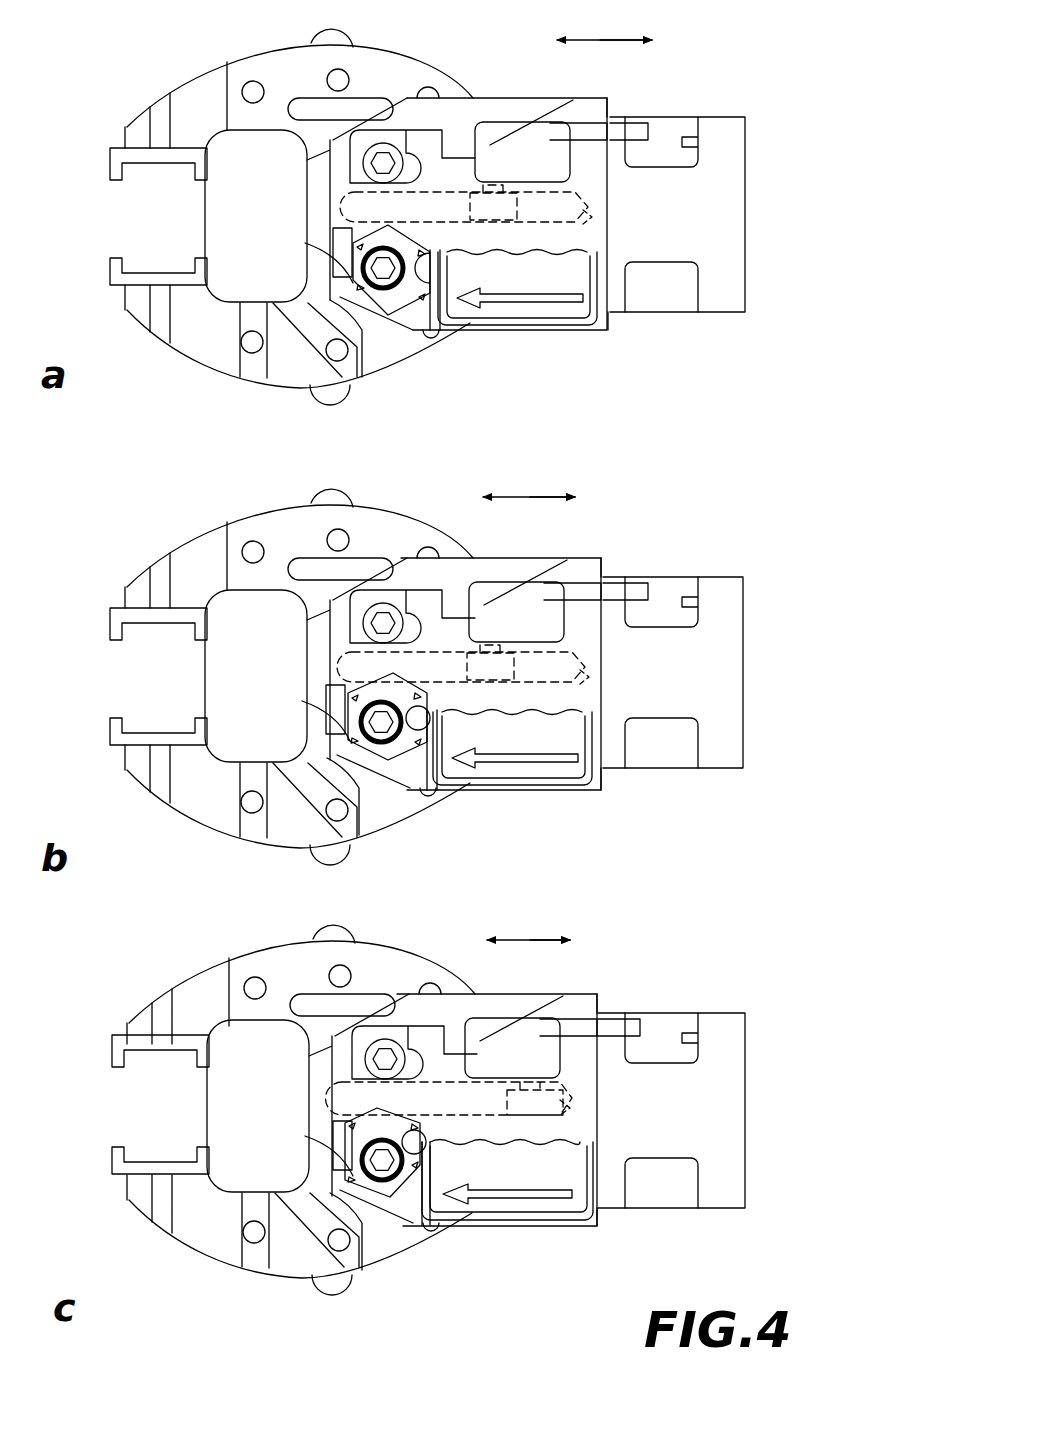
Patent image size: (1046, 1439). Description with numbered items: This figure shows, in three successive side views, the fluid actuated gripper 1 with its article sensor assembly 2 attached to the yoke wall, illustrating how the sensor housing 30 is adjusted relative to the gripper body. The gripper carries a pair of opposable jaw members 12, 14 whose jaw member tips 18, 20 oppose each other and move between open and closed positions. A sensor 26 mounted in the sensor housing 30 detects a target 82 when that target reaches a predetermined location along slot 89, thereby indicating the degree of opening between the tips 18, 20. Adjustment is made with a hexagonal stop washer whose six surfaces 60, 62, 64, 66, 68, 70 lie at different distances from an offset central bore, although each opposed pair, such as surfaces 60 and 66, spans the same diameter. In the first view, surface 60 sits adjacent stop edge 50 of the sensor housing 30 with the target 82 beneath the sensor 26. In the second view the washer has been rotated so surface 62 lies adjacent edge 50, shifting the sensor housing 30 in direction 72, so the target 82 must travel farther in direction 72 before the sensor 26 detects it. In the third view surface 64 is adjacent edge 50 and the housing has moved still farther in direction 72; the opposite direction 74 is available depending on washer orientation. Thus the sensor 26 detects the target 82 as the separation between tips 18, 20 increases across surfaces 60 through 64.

The fluid actuated gripper 1 is at (715, 95).
The article sensor assembly 2 is at (615, 327).
The jaw member 12 is at (212, 78).
The jaw member 14 is at (213, 348).
The jaw member tip 18 is at (147, 167).
The jaw member tip 20 is at (147, 270).
The sensor 26 is at (528, 157).
The sensor housing 30 is at (587, 240).
The stop edge 50 is at (430, 248).
The surface 60 is at (437, 277).
The surface 62 is at (400, 335).
The surface 64 is at (367, 313).
The surface 66 is at (340, 290).
The surface 68 is at (352, 242).
The surface 70 is at (427, 237).
The direction 72 is at (573, 32).
The direction 74 is at (640, 33).
The target 82 is at (590, 196).
The slot 89 is at (594, 222).